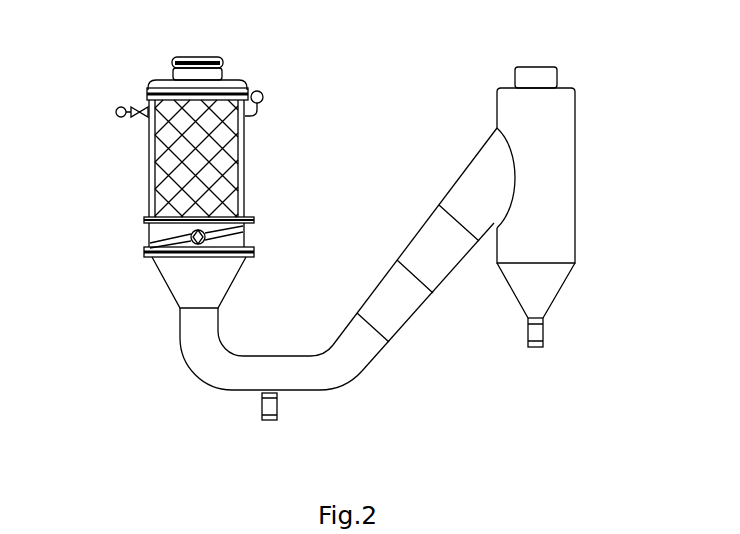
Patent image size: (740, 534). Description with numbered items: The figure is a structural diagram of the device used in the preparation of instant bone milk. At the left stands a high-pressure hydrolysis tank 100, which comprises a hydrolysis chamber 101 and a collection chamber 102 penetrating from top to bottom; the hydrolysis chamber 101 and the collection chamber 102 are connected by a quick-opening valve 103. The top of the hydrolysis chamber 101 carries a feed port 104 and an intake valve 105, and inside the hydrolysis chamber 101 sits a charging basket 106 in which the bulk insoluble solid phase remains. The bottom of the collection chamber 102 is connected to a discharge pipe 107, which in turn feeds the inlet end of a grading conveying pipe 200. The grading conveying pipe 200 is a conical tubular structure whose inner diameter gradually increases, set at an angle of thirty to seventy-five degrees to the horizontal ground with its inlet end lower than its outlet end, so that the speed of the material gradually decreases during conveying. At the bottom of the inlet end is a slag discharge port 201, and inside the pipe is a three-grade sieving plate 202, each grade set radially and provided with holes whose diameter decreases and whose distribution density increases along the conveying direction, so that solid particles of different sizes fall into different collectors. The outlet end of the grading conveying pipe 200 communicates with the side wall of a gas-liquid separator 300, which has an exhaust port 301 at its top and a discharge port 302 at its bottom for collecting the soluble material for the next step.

The high-pressure hydrolysis tank 100 is at (243, 178).
The hydrolysis chamber 101 is at (148, 175).
The collection chamber 102 is at (165, 278).
The quick-opening valve 103 is at (150, 244).
The feed port 104 is at (177, 56).
The intake valve 105 is at (116, 109).
The charging basket 106 is at (148, 150).
The discharge pipe 107 is at (195, 358).
The grading conveying pipe 200 is at (389, 342).
The slag discharge port 201 is at (275, 421).
The three-grade sieving plate 202 is at (357, 313).
The gas-liquid separator 300 is at (577, 138).
The exhaust port 301 is at (545, 66).
The discharge port 302 is at (542, 347).